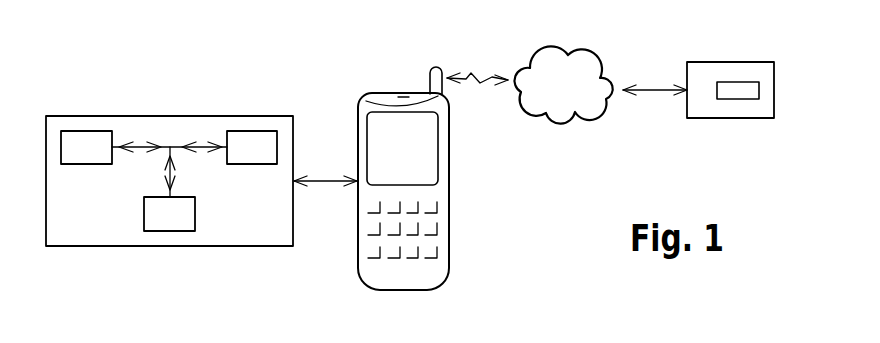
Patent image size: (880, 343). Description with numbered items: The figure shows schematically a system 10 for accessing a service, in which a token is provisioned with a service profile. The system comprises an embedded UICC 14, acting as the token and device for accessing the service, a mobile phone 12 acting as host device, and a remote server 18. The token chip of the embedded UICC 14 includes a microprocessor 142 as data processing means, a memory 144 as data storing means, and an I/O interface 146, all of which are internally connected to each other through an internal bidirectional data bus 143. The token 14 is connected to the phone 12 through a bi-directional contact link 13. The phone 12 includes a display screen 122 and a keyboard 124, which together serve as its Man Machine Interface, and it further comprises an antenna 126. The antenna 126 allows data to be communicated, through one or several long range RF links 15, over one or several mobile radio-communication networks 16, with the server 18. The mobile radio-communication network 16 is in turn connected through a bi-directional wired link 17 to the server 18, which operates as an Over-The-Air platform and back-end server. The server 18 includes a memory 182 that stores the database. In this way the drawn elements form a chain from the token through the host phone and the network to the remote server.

The system 10 is at (140, 40).
The mobile phone 12 is at (361, 113).
The display screen 122 is at (426, 167).
The keyboard 124 is at (436, 232).
The antenna 126 is at (430, 79).
The bi-directional contact link 13 is at (325, 178).
The embedded UICC 14 is at (95, 248).
The microprocessor 142 is at (90, 140).
The internal bidirectional data bus 143 is at (173, 147).
The memory 144 is at (252, 140).
The I/O interface 146 is at (172, 228).
The long range RF link 15 is at (468, 84).
The mobile radio-communication network 16 is at (578, 70).
The bi-directional wired link 17 is at (655, 88).
The remote server 18 is at (733, 62).
The memory 182 is at (733, 100).